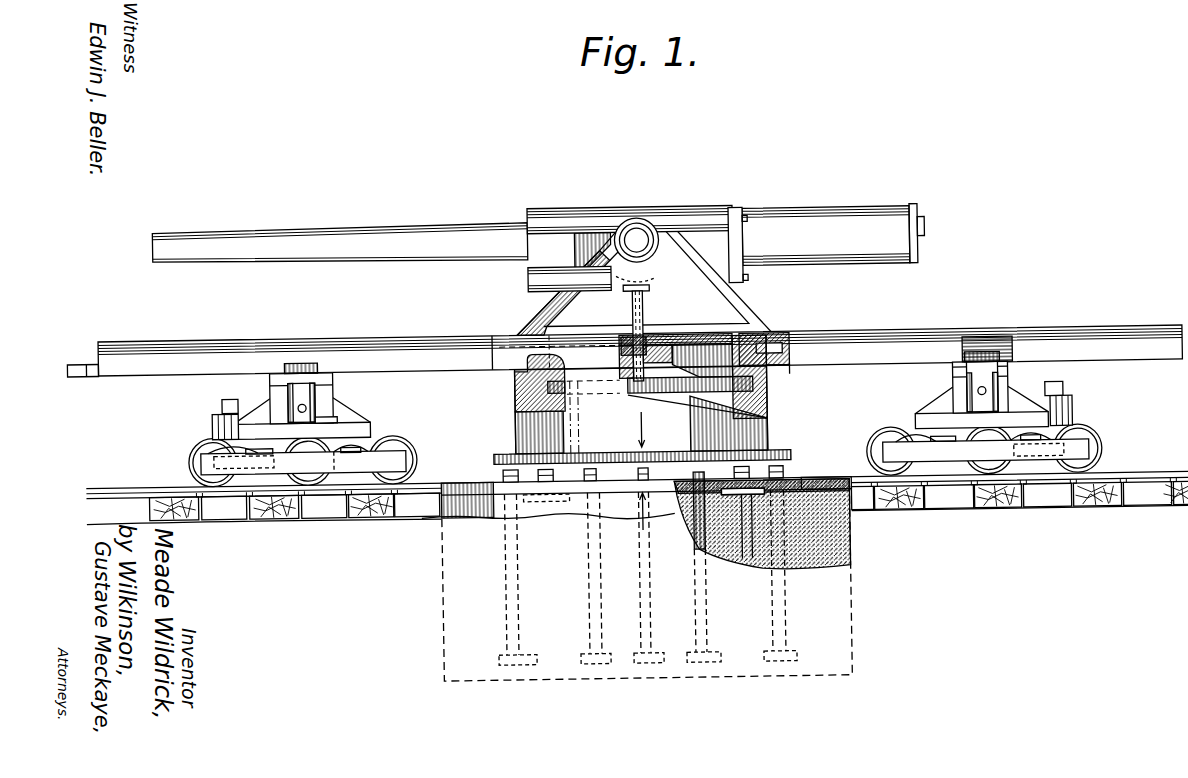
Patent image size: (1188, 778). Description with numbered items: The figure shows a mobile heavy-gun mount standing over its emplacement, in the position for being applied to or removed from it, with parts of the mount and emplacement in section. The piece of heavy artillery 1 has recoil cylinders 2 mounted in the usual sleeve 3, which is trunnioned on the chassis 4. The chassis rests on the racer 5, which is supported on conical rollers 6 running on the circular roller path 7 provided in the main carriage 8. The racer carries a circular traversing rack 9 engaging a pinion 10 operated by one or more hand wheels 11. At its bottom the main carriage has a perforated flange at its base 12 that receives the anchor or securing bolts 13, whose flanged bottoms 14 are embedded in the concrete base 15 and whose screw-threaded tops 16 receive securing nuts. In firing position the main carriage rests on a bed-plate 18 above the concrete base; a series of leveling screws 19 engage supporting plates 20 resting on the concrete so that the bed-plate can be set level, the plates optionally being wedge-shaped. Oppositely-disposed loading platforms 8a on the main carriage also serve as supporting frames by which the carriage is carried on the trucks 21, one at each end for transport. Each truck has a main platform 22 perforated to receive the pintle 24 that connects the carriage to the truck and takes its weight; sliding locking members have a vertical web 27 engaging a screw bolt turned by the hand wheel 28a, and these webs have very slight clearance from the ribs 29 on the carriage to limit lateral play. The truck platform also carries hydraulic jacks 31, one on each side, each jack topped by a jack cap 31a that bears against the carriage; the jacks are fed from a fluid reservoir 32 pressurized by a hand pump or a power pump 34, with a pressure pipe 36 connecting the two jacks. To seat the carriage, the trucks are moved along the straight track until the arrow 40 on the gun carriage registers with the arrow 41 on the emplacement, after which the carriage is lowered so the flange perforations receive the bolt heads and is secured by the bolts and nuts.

The piece of heavy artillery 1 is at (890, 214).
The recoil cylinders 2 is at (725, 208).
The sleeve 3 is at (592, 229).
The chassis 4 is at (680, 251).
The racer 5 is at (762, 335).
The conical rollers 6 is at (787, 336).
The circular roller path 7 is at (783, 370).
The main carriage 8 is at (767, 408).
The loading platforms 8a is at (356, 335).
The circular traversing rack 9 is at (693, 334).
The pinion 10 is at (645, 392).
The hand wheels 11 is at (654, 292).
The flange at base 12 is at (787, 451).
The anchor or securing bolts 13 is at (587, 622).
The flanged bottoms of bolts 14 is at (700, 661).
The concrete base 15 is at (850, 557).
The screw-threaded tops of bolts 16 is at (498, 465).
The bed-plate 18 is at (820, 481).
The leveling screws 19 is at (697, 551).
The supporting plates 20 is at (555, 496).
The trucks 21 is at (393, 454).
The main platform 22 is at (371, 423).
The pintle 24 is at (958, 382).
The vertical web 27 is at (336, 373).
The hand wheel 28a is at (1012, 375).
The ribs 29 is at (271, 372).
The hydraulic jacks 31 is at (281, 384).
The cap 31a is at (301, 355).
The fluid reservoir 32 is at (1060, 483).
The power pump 34 is at (223, 397).
The pressure pipe 36 is at (329, 415).
The arrow on gun carriage 40 is at (641, 412).
The arrow on emplacement 41 is at (641, 530).